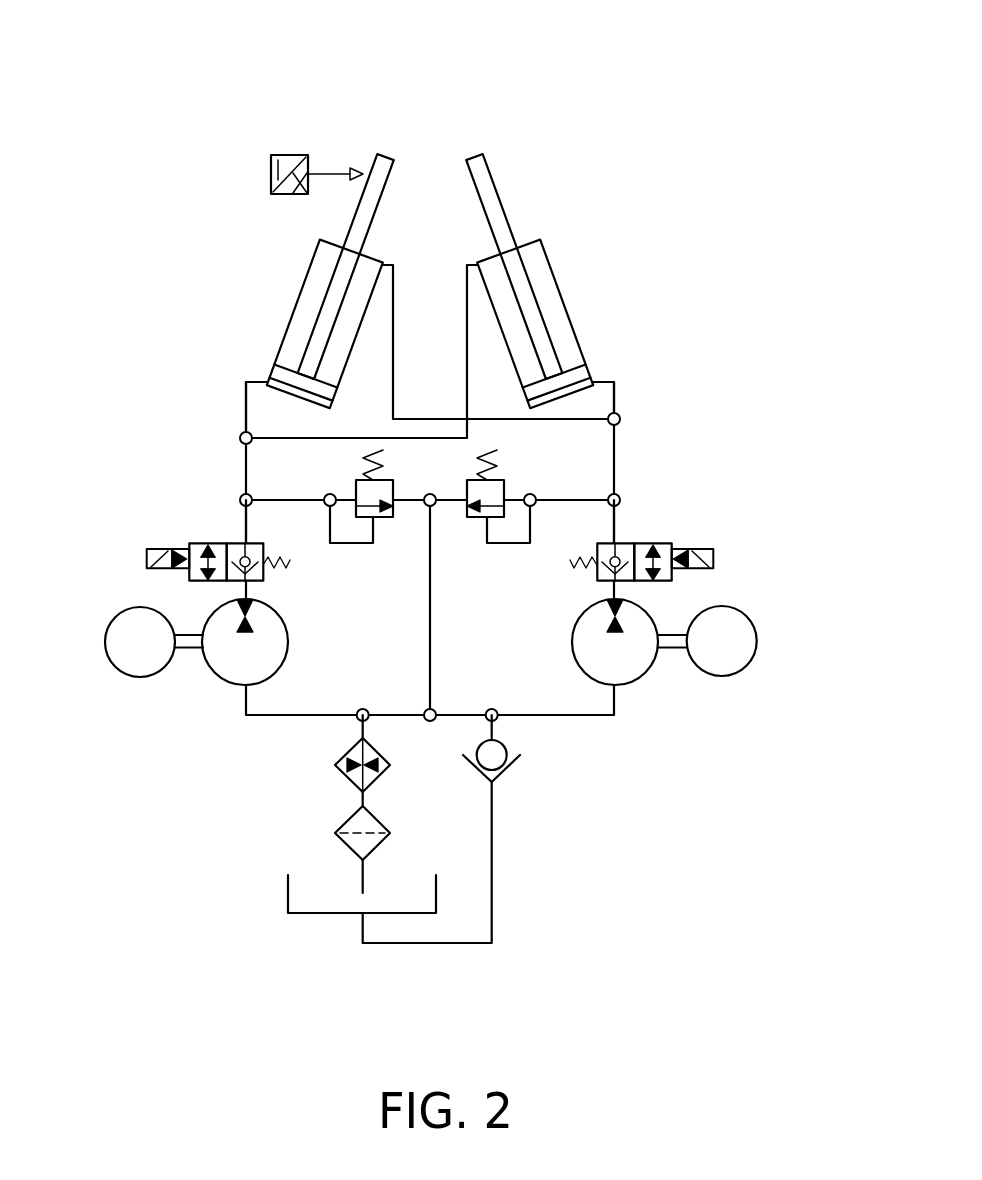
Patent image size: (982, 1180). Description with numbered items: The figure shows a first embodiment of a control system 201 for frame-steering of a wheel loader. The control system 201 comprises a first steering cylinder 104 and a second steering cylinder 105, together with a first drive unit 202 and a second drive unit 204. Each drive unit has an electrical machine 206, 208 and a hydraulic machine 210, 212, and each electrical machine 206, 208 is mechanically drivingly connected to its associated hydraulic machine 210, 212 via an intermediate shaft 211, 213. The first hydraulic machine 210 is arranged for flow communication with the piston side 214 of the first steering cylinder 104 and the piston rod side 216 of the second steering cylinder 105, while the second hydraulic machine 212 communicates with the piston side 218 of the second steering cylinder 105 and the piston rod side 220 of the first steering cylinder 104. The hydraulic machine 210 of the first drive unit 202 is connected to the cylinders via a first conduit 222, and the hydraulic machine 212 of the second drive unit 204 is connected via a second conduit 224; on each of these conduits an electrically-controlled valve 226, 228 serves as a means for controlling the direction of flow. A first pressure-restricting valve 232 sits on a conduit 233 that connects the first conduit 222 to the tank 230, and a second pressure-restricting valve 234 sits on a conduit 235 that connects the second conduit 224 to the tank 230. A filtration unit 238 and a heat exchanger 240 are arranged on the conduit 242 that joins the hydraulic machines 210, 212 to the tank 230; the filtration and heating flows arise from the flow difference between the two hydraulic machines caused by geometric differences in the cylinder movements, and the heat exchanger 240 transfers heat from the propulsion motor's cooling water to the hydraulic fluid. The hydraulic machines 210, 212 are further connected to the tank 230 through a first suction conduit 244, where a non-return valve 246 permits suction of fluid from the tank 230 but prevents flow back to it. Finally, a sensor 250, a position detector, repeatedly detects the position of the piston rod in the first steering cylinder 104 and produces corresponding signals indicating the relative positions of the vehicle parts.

The control system 201 is at (198, 107).
The sensor 250 is at (290, 155).
The piston rod side of the first steering cylinder 220 is at (317, 262).
The piston rod side of the second steering cylinder 216 is at (540, 262).
The first steering cylinder 104 is at (288, 277).
The second steering cylinder 105 is at (569, 277).
The piston side of the first steering cylinder 214 is at (272, 389).
The piston side of the second steering cylinder 218 is at (587, 390).
The first pressure-restricting valve 232 is at (290, 500).
The conduit 233 is at (356, 482).
The second pressure-restricting valve 234 is at (504, 488).
The conduit 235 is at (573, 500).
The first conduit 222 is at (246, 523).
The second conduit 224 is at (614, 525).
The electrically-controlled valve 226 is at (198, 543).
The electrically-controlled valve 228 is at (663, 543).
The hydraulic machine 210 is at (213, 610).
The hydraulic machine 212 is at (640, 678).
The electrical machine 206 is at (105, 658).
The electrical machine 208 is at (722, 677).
The intermediate shaft 211 is at (190, 650).
The intermediate shaft 213 is at (672, 632).
The first drive unit 202 is at (155, 635).
The second drive unit 204 is at (706, 629).
The heat exchanger 240 is at (343, 742).
The conduit 242 is at (360, 800).
The filtration unit 238 is at (344, 818).
The non-return valve 246 is at (508, 768).
The first suction conduit 244 is at (492, 863).
The tank 230 is at (320, 912).